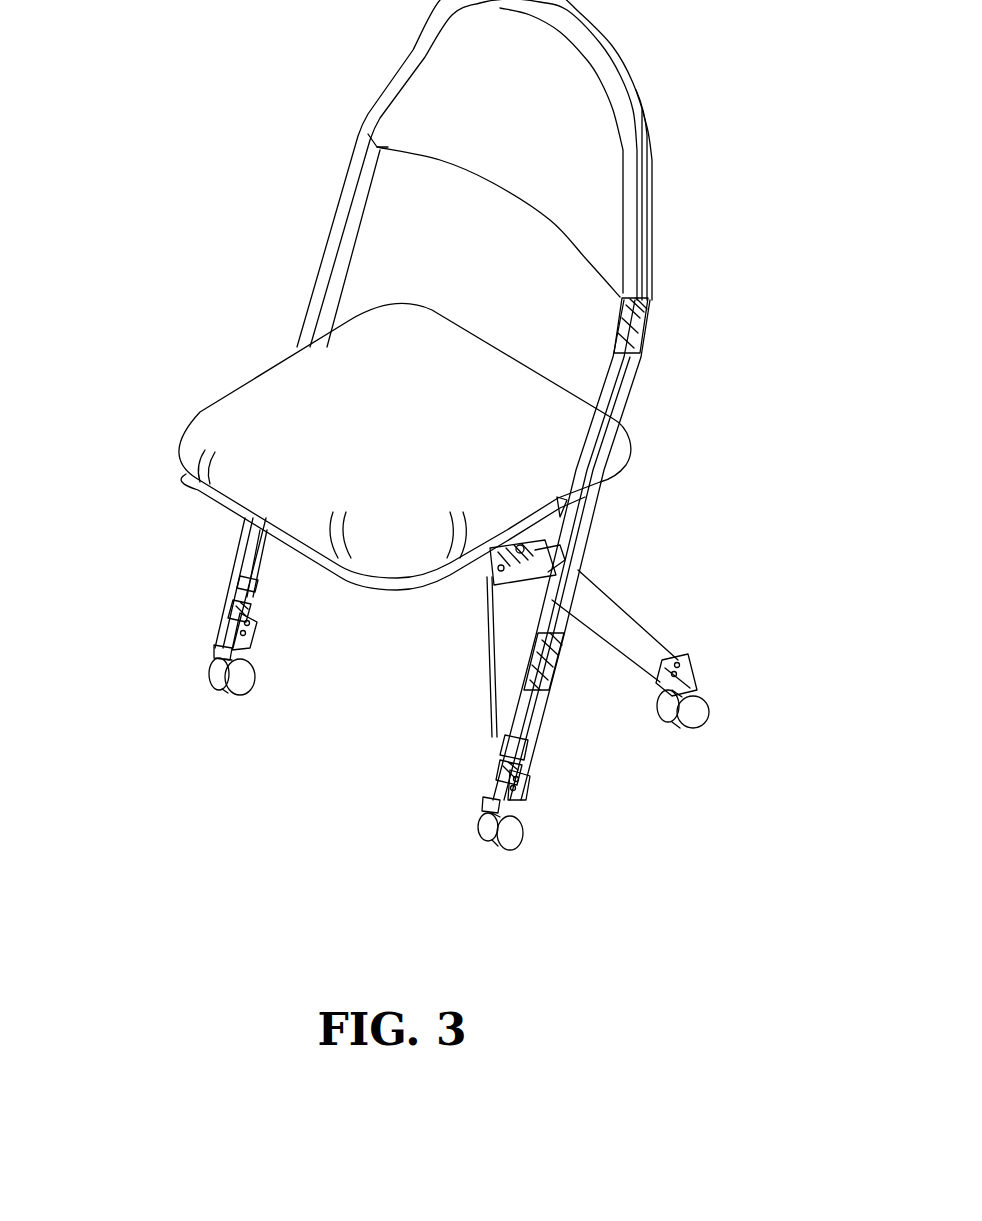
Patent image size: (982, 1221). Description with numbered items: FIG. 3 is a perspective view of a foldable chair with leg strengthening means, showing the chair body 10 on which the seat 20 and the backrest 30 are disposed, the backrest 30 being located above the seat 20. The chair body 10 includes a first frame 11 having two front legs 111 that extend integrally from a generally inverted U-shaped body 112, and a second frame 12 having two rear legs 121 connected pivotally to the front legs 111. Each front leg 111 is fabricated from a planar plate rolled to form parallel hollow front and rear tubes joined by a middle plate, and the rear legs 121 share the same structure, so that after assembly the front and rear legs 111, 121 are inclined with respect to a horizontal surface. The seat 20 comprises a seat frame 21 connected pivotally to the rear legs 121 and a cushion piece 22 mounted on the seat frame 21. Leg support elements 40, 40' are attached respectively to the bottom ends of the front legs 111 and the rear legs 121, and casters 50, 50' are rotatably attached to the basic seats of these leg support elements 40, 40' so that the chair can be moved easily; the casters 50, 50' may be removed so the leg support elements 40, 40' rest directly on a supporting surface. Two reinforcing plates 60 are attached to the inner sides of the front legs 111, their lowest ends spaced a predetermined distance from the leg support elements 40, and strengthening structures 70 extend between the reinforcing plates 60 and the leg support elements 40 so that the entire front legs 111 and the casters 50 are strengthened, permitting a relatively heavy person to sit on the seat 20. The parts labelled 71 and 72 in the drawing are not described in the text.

The chair body 10 is at (800, 307).
The first frame 11 is at (762, 347).
The front legs 111 is at (247, 545).
The inverted U-shaped body 112 is at (330, 232).
The second frame 12 is at (748, 550).
The rear legs 121 is at (627, 613).
The seat 20 is at (125, 350).
The seat frame 21 is at (175, 462).
The cushion piece 22 is at (205, 435).
The backrest 30 is at (497, 140).
The leg support elements 40 is at (366, 713).
The leg support elements 40' is at (705, 649).
The casters 50 is at (413, 754).
The casters 50' is at (714, 702).
The reinforcing plates 60 is at (267, 553).
The strengthening structures 70 is at (137, 543).
The lock sleeve 71 is at (232, 606).
The lock button 72 is at (237, 582).